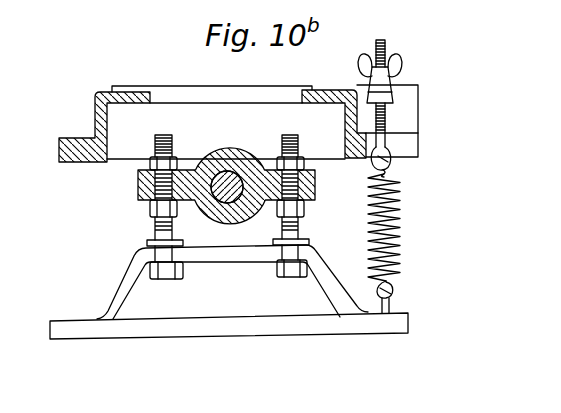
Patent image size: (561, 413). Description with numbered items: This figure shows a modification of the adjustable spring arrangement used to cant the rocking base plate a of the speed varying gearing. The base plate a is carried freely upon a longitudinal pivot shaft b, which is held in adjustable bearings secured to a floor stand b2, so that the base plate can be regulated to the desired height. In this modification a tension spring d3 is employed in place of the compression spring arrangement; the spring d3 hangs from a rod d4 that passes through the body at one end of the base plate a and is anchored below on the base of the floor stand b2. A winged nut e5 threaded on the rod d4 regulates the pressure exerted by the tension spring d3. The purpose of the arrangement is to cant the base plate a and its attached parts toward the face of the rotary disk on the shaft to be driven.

The rocking base plate a is at (448, 115).
The longitudinal pivot shaft b is at (226, 180).
The floor stand b2 is at (225, 313).
The tension spring d3 is at (400, 228).
The rod d4 is at (384, 44).
The winged nut e5 is at (393, 70).